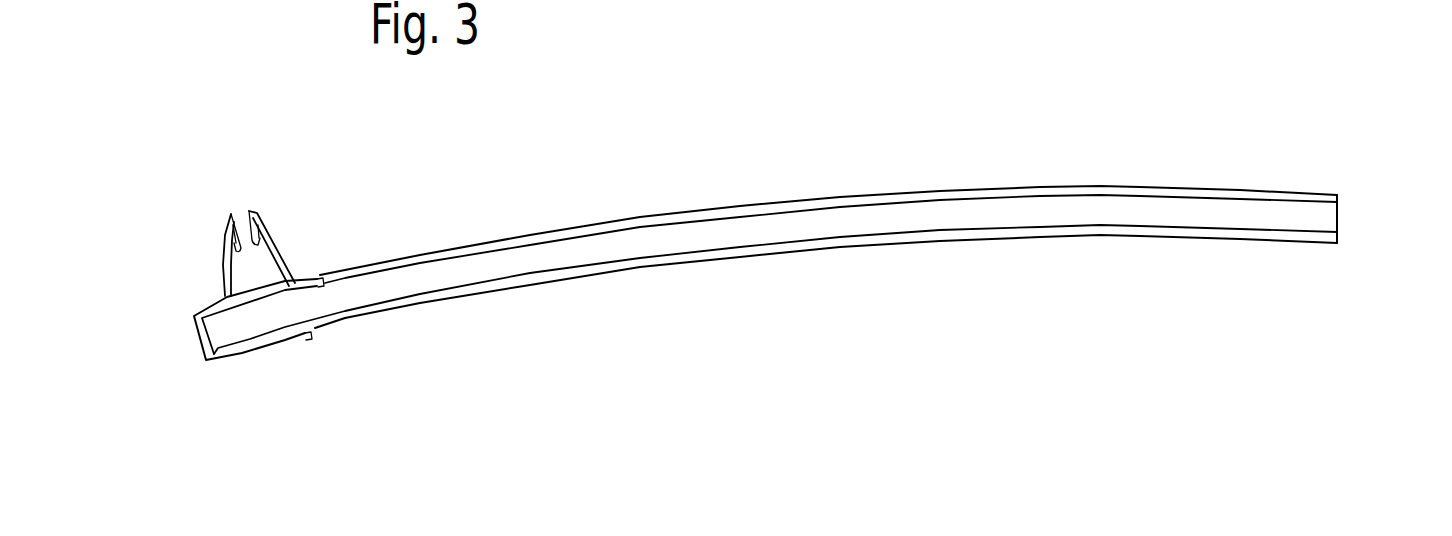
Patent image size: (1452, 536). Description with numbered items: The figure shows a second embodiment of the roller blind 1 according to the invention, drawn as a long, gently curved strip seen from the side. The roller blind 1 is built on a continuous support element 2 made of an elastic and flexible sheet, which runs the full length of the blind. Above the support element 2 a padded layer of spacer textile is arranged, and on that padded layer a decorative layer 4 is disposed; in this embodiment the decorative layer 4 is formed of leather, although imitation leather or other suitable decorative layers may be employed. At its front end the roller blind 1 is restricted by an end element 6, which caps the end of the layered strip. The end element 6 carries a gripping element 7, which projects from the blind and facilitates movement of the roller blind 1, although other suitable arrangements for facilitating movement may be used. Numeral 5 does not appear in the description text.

The roller blind 1 is at (735, 162).
The support element 2 is at (1273, 233).
The decorative layer 4 is at (1335, 215).
The wiper strip 5 is at (1270, 195).
The end element 6 is at (200, 342).
The gripping element 7 is at (225, 238).